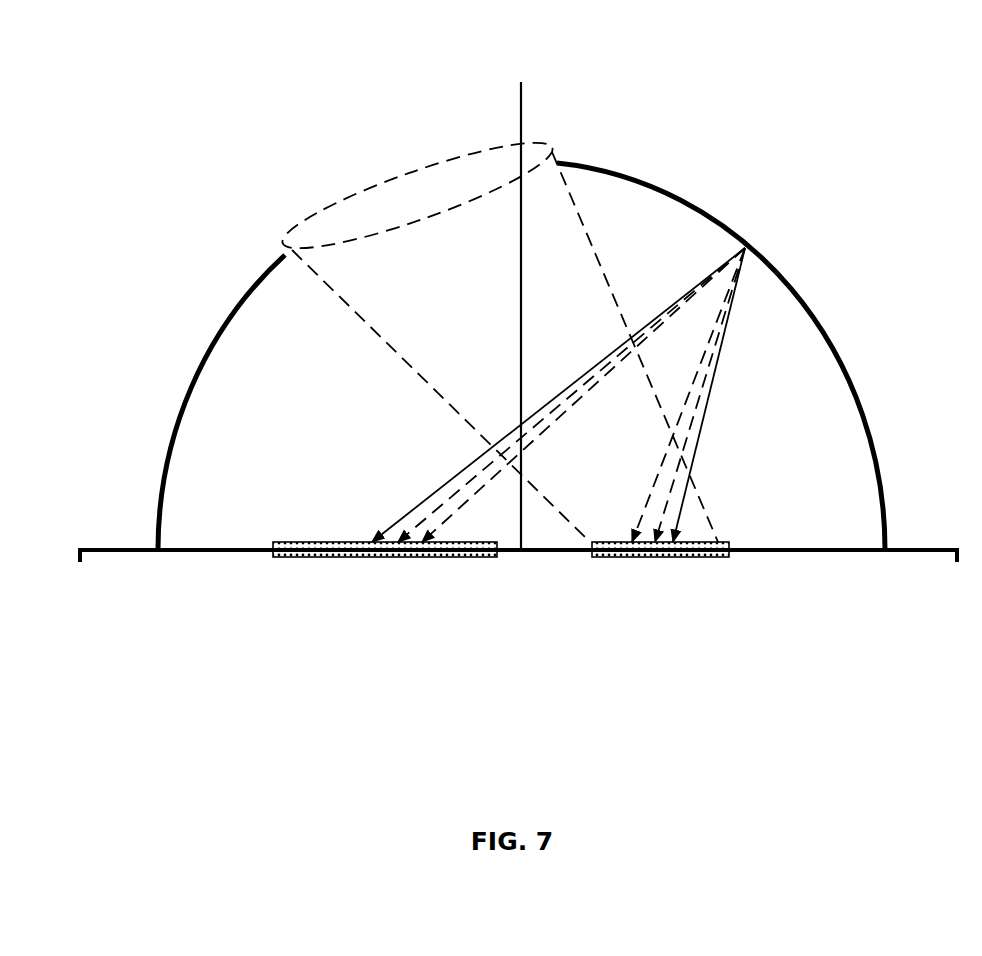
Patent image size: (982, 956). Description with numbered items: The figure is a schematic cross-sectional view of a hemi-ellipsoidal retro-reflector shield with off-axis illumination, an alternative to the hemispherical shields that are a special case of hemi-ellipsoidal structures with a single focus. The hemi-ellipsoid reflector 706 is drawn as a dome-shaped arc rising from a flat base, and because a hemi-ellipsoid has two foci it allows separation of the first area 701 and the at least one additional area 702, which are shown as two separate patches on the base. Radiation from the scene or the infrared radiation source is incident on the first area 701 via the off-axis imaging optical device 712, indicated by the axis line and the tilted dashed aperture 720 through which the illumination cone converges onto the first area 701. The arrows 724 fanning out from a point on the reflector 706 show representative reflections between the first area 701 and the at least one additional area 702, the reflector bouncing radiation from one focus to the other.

The first area 701 is at (595, 560).
The at least one additional area 702 is at (275, 560).
The hemi-ellipsoid reflector 706 is at (842, 365).
The optical device 712 is at (532, 122).
The aperture 720 is at (593, 243).
The light rays 724 is at (690, 295).